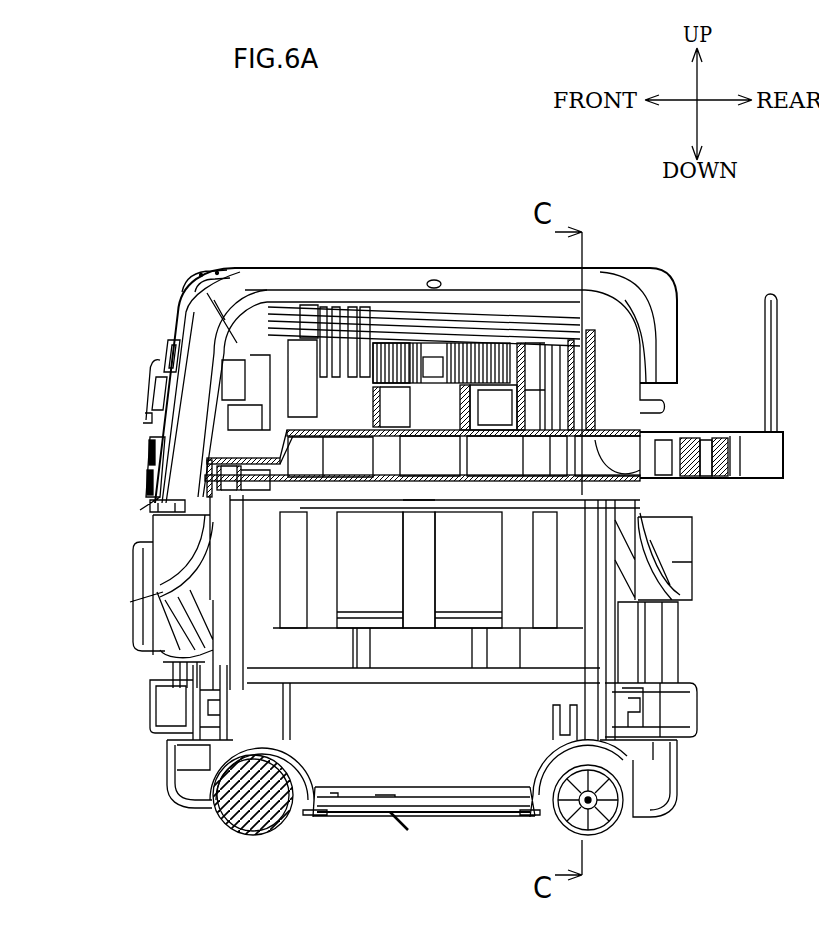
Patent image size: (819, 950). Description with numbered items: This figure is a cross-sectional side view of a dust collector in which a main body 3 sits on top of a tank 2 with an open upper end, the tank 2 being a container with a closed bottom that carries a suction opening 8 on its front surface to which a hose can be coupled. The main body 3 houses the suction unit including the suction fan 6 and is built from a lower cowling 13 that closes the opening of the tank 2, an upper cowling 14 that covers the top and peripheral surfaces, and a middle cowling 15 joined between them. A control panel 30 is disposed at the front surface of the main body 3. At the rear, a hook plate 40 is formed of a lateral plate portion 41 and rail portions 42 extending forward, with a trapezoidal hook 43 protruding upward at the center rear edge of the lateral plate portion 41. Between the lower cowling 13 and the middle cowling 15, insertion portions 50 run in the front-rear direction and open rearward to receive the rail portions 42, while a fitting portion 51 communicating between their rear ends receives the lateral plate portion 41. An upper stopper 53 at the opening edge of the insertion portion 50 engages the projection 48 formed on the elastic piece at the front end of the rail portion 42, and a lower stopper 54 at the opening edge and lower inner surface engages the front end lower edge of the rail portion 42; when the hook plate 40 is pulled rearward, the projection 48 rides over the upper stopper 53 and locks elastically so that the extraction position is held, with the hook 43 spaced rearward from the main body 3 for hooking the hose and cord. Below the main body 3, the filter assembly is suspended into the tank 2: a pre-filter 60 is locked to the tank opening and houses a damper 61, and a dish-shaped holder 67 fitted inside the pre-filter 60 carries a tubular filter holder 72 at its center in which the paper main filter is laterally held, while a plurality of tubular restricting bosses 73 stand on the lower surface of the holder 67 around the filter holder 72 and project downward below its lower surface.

The tank 2 is at (689, 648).
The main body 3 is at (329, 258).
The suction fan 6 is at (818, 618).
The suction opening 8 is at (148, 596).
The lower cowling 13 is at (185, 500).
The upper cowling 14 is at (366, 270).
The middle cowling 15 is at (290, 377).
The control panel 30 is at (168, 340).
The hook plate 40 is at (727, 430).
The lateral plate portion 41 is at (767, 467).
The rail portion 42 is at (663, 433).
The hook 43 is at (775, 310).
The projection 48 is at (664, 290).
The insertion portion 50 is at (497, 453).
The fitting portion 51 is at (690, 472).
The upper stopper 53 is at (521, 345).
The lower stopper 54 is at (582, 500).
The pre-filter 60 is at (503, 680).
The damper 61 is at (455, 660).
The holder 67 is at (213, 522).
The filter holder 72 is at (384, 603).
The restricting boss 73 is at (320, 608).